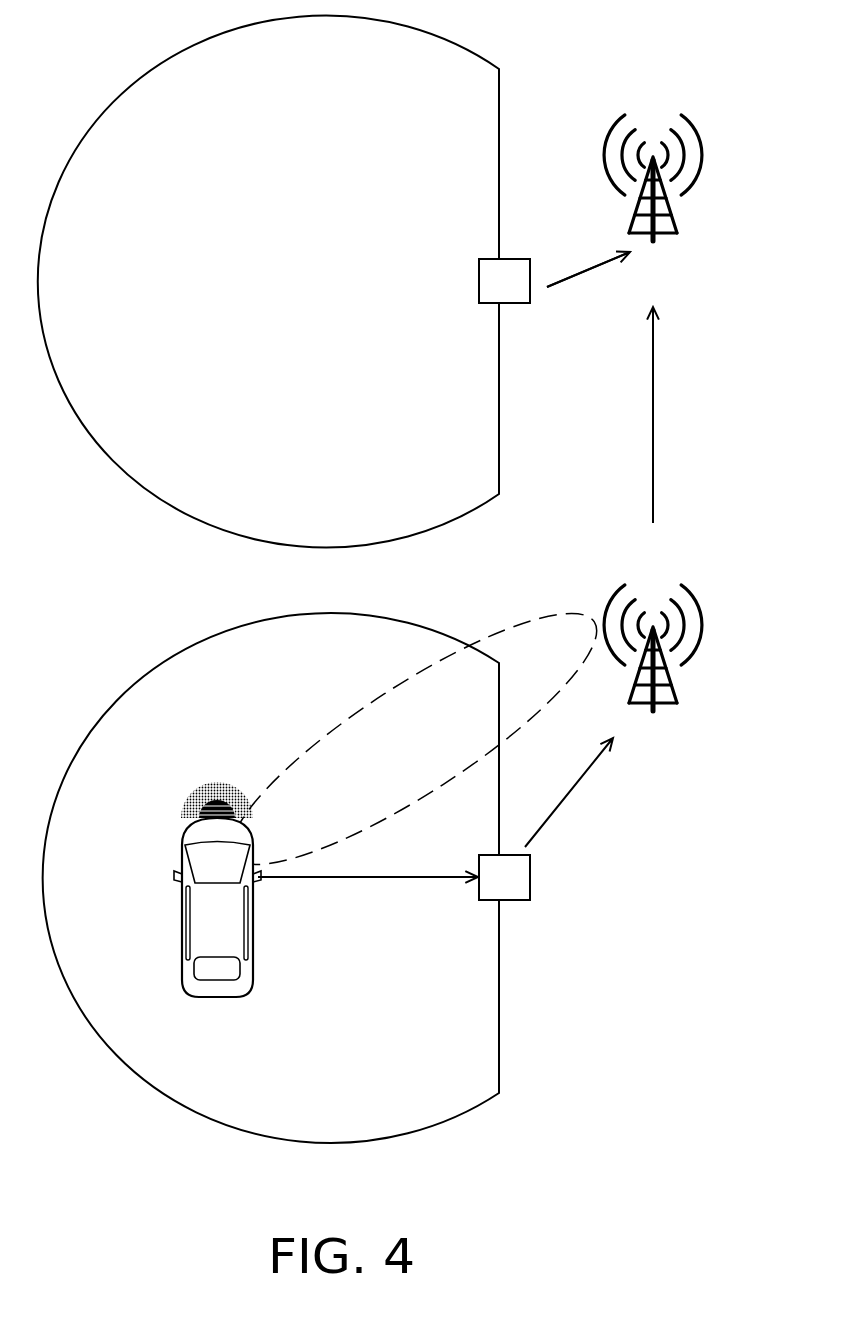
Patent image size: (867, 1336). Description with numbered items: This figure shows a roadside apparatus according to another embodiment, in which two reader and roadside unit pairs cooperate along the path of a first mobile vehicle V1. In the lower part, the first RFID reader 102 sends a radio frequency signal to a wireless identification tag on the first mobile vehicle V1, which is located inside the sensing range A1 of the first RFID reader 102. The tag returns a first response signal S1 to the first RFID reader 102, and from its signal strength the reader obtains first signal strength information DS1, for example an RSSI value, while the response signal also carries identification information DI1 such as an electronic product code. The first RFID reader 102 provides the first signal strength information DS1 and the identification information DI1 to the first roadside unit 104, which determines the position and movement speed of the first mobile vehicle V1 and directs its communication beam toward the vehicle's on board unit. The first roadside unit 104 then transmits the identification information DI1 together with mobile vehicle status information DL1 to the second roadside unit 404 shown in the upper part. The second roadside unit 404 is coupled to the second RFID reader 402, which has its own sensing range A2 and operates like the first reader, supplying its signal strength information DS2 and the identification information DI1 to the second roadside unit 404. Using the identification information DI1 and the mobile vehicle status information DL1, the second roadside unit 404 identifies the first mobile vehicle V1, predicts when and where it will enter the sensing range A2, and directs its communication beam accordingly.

The first RFID reader 102 is at (517, 900).
The first roadside unit 104 is at (668, 708).
The second RFID reader 402 is at (519, 259).
The second roadside unit 404 is at (668, 238).
The first mobile vehicle V1 is at (215, 997).
The sensing range of the first RFID reader A1 is at (461, 1088).
The sensing range of the second RFID reader A2 is at (461, 72).
The first response signal S1 is at (368, 895).
The first signal strength information DS1 is at (590, 793).
The second sensing data DS2 is at (587, 291).
The identification information DI1 is at (594, 291).
The mobile vehicle status information DL1 is at (673, 415).